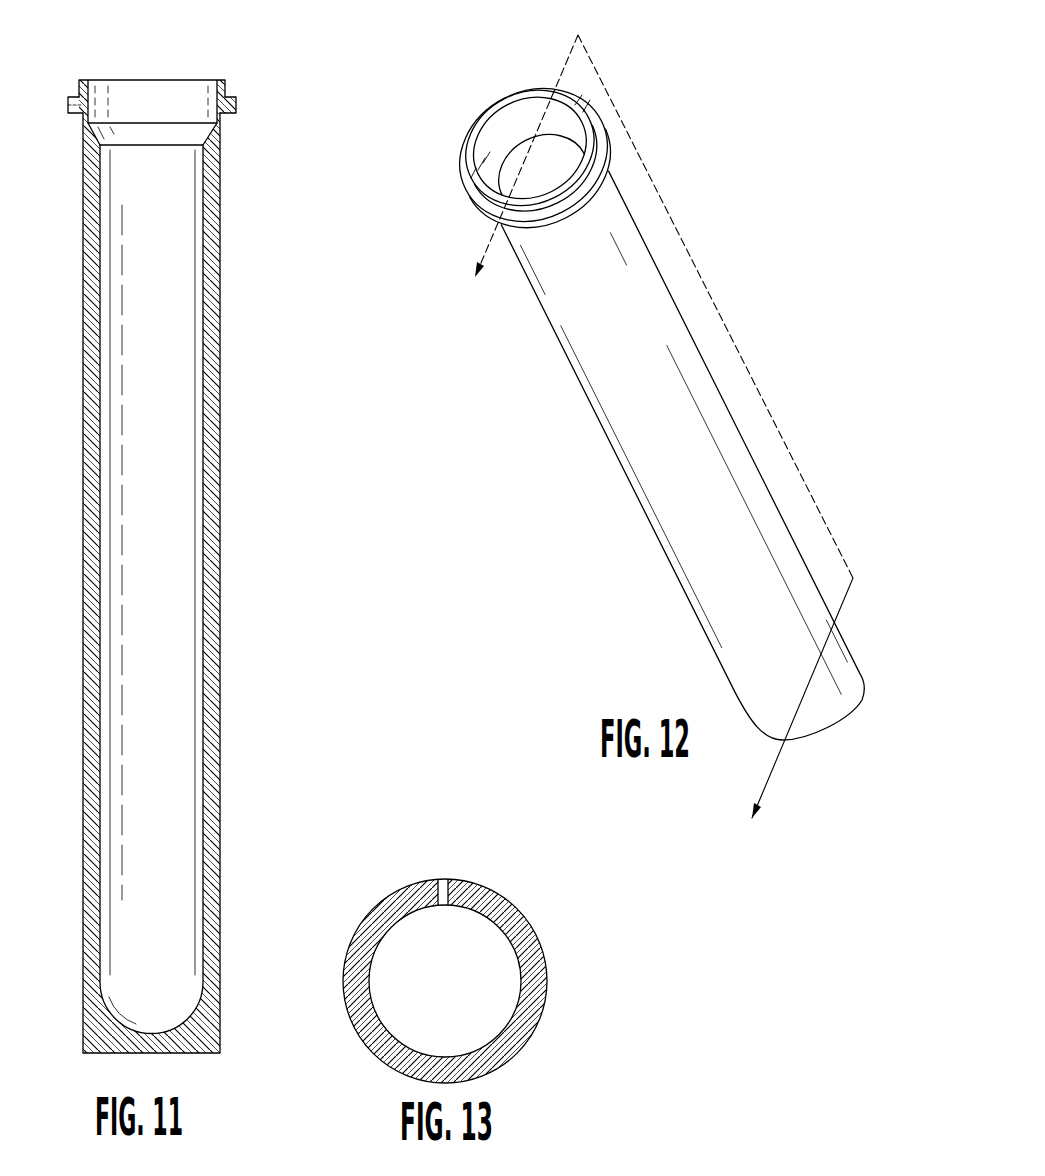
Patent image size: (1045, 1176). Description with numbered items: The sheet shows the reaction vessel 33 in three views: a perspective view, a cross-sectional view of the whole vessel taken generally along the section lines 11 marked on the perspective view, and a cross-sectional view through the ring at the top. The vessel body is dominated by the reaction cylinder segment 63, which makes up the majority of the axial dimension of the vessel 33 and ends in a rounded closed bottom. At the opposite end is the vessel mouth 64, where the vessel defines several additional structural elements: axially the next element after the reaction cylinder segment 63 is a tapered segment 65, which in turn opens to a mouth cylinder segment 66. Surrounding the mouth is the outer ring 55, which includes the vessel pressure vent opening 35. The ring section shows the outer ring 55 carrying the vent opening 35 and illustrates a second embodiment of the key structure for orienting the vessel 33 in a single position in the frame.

In FIG. 12, the section lines 11- 11 is at (658, 448).
In FIG. 11, the reaction vessel 33 is at (174, 539).
In FIG. 12, the reaction vessel 33 is at (677, 419).
In FIG. 11, the vessel pressure vent opening 35 is at (78, 110).
In FIG. 13, the vessel pressure vent opening 35 is at (441, 878).
In FIG. 11, the outer ring 55 is at (236, 114).
In FIG. 13, the outer ring 55 is at (538, 962).
In FIG. 11, the reaction cylinder segment 63 is at (84, 537).
In FIG. 11, the vessel mouth 64 is at (125, 217).
In FIG. 11, the tapered segment 65 is at (206, 138).
In FIG. 11, the mouth cylinder segment 66 is at (222, 90).